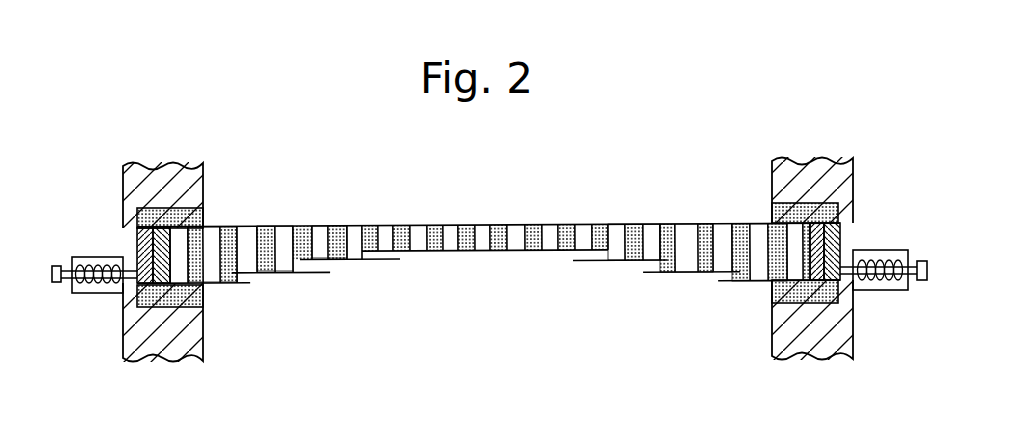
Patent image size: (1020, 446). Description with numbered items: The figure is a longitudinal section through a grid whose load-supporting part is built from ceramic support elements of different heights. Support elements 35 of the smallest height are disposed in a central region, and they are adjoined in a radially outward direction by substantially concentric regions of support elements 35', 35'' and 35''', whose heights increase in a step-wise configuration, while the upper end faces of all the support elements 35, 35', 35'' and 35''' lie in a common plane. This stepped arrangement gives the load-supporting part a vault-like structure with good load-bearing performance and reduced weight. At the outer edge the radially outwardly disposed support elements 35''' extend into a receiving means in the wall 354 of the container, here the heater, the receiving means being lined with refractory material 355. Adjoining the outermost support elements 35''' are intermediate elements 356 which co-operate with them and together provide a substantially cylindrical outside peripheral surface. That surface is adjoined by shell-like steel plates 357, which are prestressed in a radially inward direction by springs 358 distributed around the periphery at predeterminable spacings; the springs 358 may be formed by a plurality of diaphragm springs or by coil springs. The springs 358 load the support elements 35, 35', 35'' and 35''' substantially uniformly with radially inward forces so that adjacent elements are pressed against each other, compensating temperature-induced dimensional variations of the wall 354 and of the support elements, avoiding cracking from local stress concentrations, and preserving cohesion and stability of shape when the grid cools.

The support element 35 is at (488, 223).
The support element 35' is at (490, 213).
The support element 35'' is at (485, 273).
The support element 35''' is at (487, 283).
The wall 354 is at (123, 168).
The refractory material 355 is at (198, 214).
The intermediate element 356 is at (152, 241).
The steel plate 357 is at (127, 336).
The spring 358 is at (91, 294).